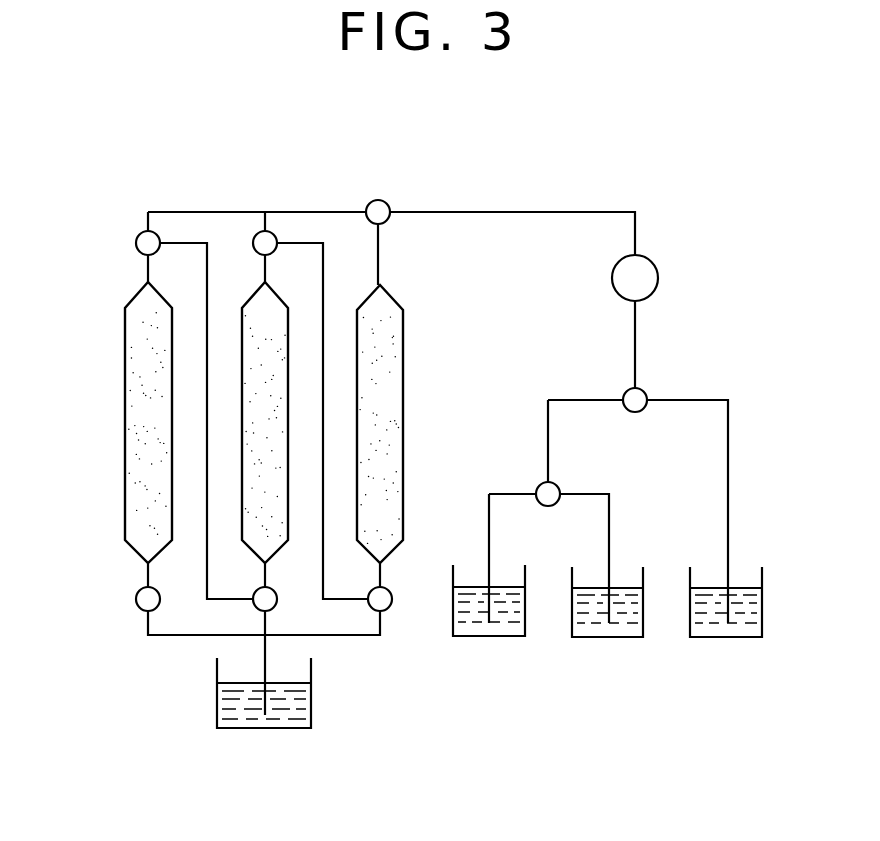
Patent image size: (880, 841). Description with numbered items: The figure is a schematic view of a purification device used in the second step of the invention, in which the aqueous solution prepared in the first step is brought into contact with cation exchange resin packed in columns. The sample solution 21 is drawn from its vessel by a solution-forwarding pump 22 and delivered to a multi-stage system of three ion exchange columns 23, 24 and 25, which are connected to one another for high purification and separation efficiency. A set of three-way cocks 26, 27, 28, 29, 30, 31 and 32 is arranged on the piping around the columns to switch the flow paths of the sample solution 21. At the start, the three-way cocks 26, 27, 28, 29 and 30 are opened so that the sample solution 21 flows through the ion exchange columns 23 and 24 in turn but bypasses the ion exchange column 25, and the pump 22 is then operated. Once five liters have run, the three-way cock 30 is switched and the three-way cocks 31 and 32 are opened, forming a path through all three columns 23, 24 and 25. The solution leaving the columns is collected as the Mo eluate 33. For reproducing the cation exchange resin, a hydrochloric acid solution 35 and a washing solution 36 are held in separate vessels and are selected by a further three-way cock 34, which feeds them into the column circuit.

The sample solution 21 is at (741, 628).
The pump 22 is at (650, 280).
The ion exchange column 23 is at (404, 408).
The ion exchange column 24 is at (270, 306).
The ion exchange column 25 is at (130, 418).
The three-way cock 26 is at (644, 392).
The three-way cock 27 is at (388, 205).
The three-way cock 28 is at (388, 605).
The three-way cock 29 is at (276, 239).
The three-way cock 30 is at (273, 604).
The three-way cock 31 is at (159, 239).
The three-way cock 32 is at (157, 604).
The Mo eluate 33 is at (311, 703).
The three-way cock 34 is at (557, 486).
The hydrochloric acid solution 35 is at (623, 628).
The washing solution 36 is at (511, 628).